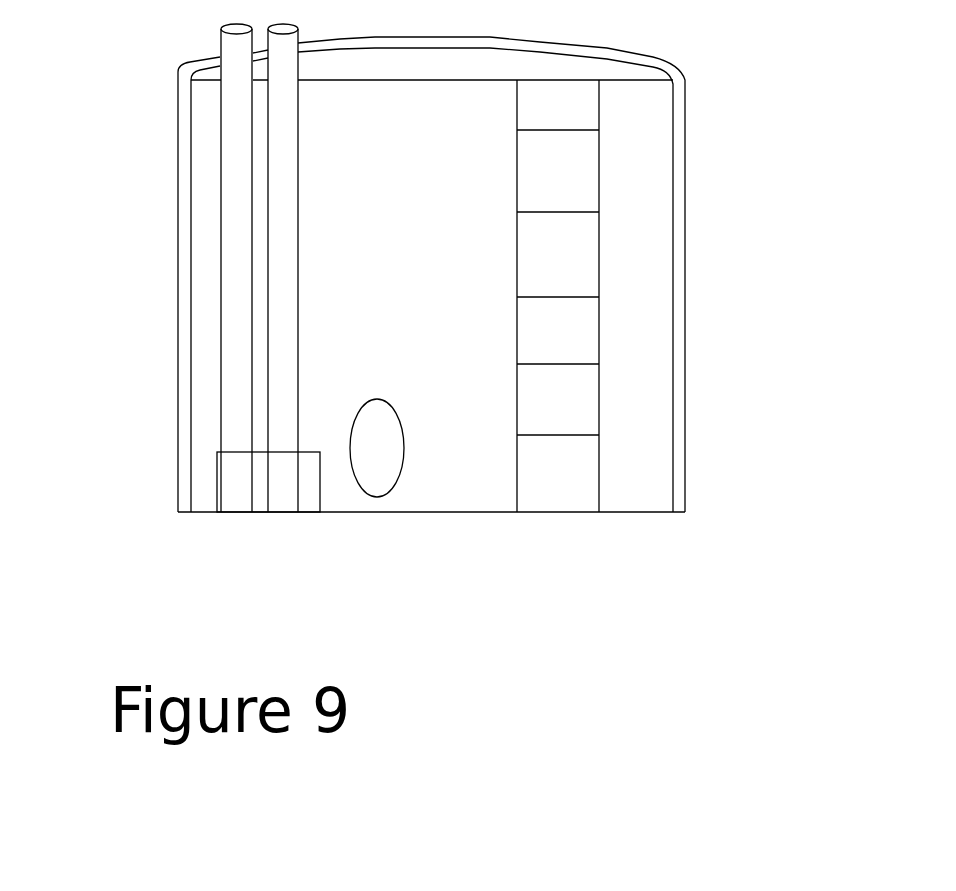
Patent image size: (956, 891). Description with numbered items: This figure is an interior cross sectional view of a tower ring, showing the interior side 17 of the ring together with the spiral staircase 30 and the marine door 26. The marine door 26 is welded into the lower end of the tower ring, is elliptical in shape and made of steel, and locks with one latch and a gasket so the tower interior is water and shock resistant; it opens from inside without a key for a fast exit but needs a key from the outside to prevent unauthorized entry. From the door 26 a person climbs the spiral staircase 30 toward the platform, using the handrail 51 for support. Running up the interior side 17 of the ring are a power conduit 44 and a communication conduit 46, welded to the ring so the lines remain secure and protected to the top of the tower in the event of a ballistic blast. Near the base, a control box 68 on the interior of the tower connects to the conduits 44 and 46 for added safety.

The interior side 17 is at (685, 242).
The handrail 51 is at (599, 331).
The spiral staircase 30 is at (590, 435).
The power conduit 44 is at (267, 182).
The communication conduit 46 is at (220, 323).
The control box 68 is at (258, 501).
The marine door 26 is at (371, 497).